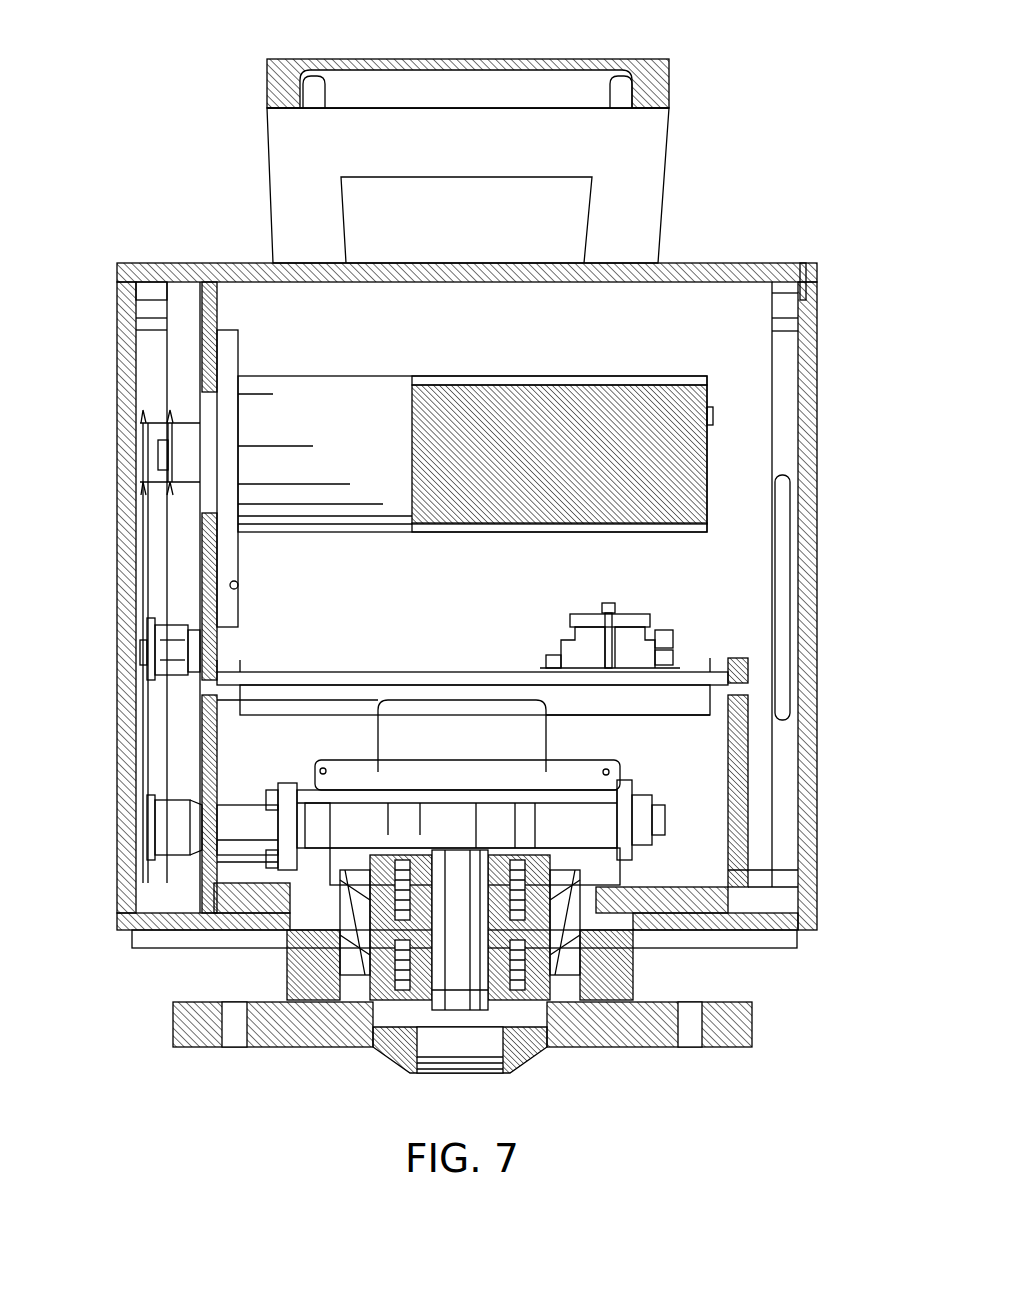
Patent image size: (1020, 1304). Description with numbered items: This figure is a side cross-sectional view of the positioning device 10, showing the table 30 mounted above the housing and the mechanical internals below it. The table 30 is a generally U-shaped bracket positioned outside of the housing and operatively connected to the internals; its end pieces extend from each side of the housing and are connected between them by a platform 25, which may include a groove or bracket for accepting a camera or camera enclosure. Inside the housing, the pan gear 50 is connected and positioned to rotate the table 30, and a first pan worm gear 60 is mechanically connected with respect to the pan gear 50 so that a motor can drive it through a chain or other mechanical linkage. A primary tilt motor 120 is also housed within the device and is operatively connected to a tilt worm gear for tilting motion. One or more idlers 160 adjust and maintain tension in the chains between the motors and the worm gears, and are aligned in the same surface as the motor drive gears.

The positioning device 10 is at (152, 99).
The platform 25 is at (669, 62).
The table 30 is at (722, 178).
The pan gear 50 is at (593, 820).
The first pan worm gear 60 is at (150, 828).
The primary tilt motor 120 is at (683, 444).
The idler 160 is at (150, 648).